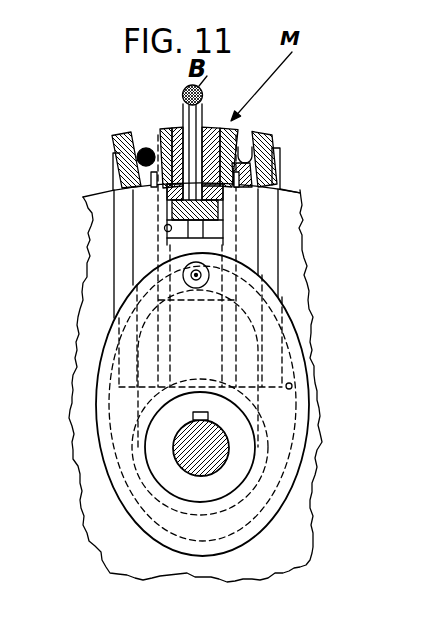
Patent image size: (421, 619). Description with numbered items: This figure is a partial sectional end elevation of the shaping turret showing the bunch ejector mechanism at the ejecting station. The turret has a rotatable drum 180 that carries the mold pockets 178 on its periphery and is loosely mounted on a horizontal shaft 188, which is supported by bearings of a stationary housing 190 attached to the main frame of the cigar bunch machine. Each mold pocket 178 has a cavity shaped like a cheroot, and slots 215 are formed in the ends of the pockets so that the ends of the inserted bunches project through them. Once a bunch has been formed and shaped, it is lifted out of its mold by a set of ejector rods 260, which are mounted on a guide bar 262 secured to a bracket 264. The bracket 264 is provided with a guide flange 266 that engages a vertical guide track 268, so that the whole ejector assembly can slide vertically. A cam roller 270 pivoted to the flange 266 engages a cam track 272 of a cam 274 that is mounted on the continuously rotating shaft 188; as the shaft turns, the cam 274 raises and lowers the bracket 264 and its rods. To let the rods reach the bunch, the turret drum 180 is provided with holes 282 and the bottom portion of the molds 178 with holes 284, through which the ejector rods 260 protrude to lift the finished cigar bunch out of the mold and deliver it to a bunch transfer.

The mold pockets 178 is at (112, 137).
The rotatable drum 180 is at (274, 135).
The horizontal shaft 188 is at (212, 440).
The stationary housing 190 is at (306, 347).
The slots 215 is at (238, 135).
The ejector rods 260 is at (182, 110).
The guide bar 262 is at (223, 196).
The bracket 264 is at (223, 220).
The guide flange 266 is at (176, 245).
The vertical guide track 268 is at (164, 228).
The cam roller 270 is at (210, 285).
The cam track 272 is at (293, 389).
The cam 274 is at (282, 477).
The holes 282 is at (117, 188).
The holes 284 is at (118, 160).